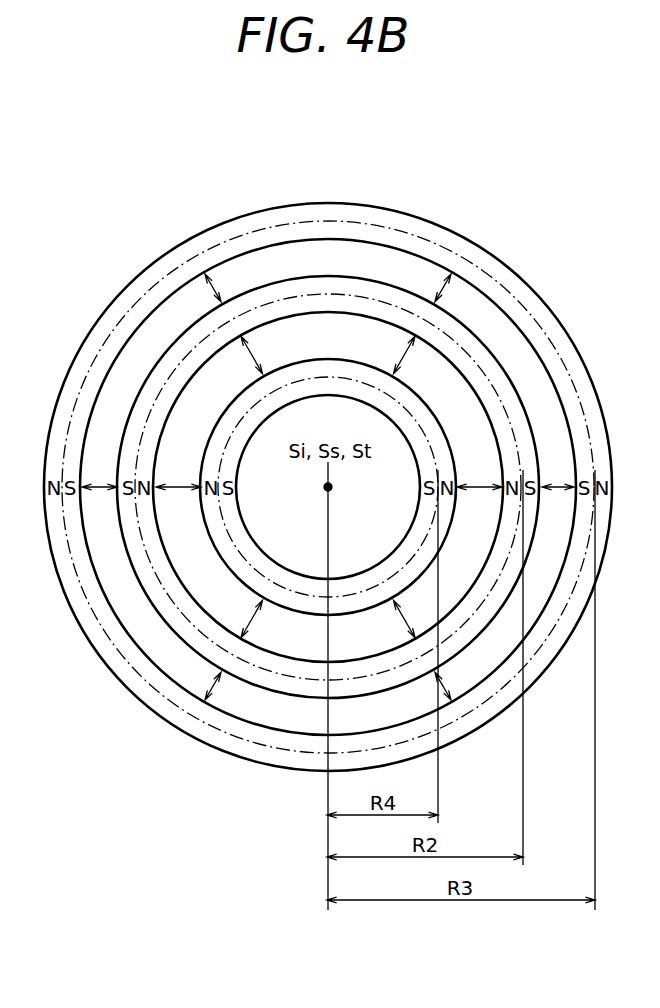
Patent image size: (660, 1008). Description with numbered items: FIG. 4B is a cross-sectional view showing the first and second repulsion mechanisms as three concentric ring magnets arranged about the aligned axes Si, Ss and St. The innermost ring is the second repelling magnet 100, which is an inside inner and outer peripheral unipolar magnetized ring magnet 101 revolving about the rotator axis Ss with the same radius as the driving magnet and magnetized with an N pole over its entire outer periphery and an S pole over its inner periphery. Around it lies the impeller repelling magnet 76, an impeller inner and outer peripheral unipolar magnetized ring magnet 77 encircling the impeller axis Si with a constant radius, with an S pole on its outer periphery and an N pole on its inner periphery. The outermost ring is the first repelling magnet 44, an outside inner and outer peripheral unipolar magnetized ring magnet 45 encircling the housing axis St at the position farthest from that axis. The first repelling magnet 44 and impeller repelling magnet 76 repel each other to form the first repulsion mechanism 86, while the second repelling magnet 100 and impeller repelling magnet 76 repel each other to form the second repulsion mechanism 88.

The first repelling magnet 44 is at (328, 469).
The outside inner and outer peripheral unipolar magnetized ring magnet 45 is at (267, 206).
The impeller repelling magnet 76 is at (388, 487).
The impeller inner and outer peripheral unipolar magnetized ring magnet 77 is at (495, 353).
The first repulsion mechanism 86 is at (445, 288).
The second repulsion mechanism 88 is at (402, 354).
The second repelling magnet 100 is at (328, 487).
The inside inner and outer peripheral unipolar magnetized ring magnet 101 is at (244, 443).